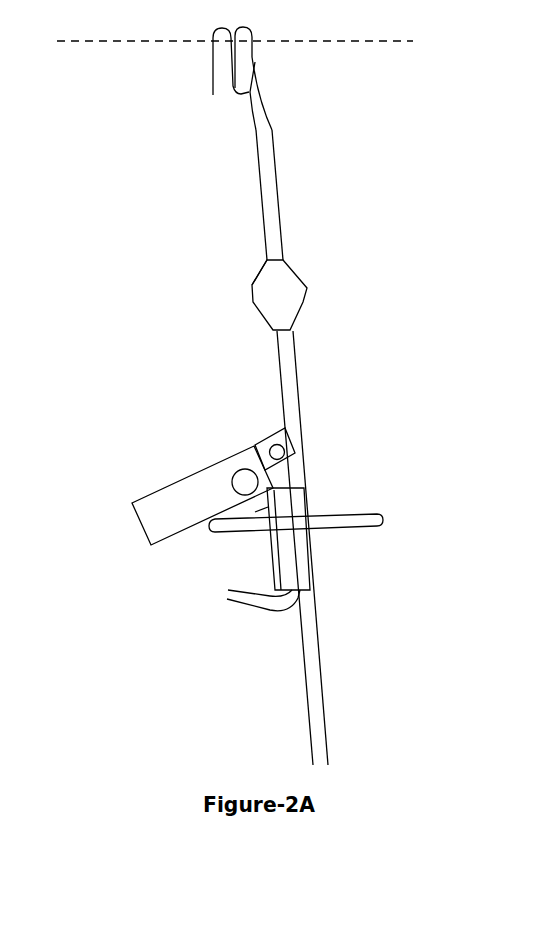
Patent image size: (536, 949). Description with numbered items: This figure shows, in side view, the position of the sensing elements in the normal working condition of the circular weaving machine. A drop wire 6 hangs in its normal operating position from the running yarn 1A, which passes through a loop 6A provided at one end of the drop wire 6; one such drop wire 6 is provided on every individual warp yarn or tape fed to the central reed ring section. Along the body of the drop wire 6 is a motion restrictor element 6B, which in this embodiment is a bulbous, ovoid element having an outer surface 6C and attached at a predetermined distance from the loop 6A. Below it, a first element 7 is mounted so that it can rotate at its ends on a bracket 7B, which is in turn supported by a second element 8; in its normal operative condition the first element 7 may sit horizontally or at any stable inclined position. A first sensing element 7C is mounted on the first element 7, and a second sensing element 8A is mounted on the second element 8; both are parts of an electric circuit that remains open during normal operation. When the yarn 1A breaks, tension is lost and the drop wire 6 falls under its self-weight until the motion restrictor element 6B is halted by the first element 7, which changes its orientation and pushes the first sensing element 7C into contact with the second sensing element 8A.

The yarn 1A is at (318, 41).
The drop wire 6 is at (279, 170).
The loop 6A is at (255, 62).
The motion restrictor element 6B is at (300, 305).
The outer surface of motion restrictor element 6C is at (254, 279).
The first element 7 is at (314, 446).
The bracket 7B is at (254, 513).
The first sensing element 7C is at (294, 460).
The second element 8 is at (338, 518).
The second sensing element 8A is at (292, 505).